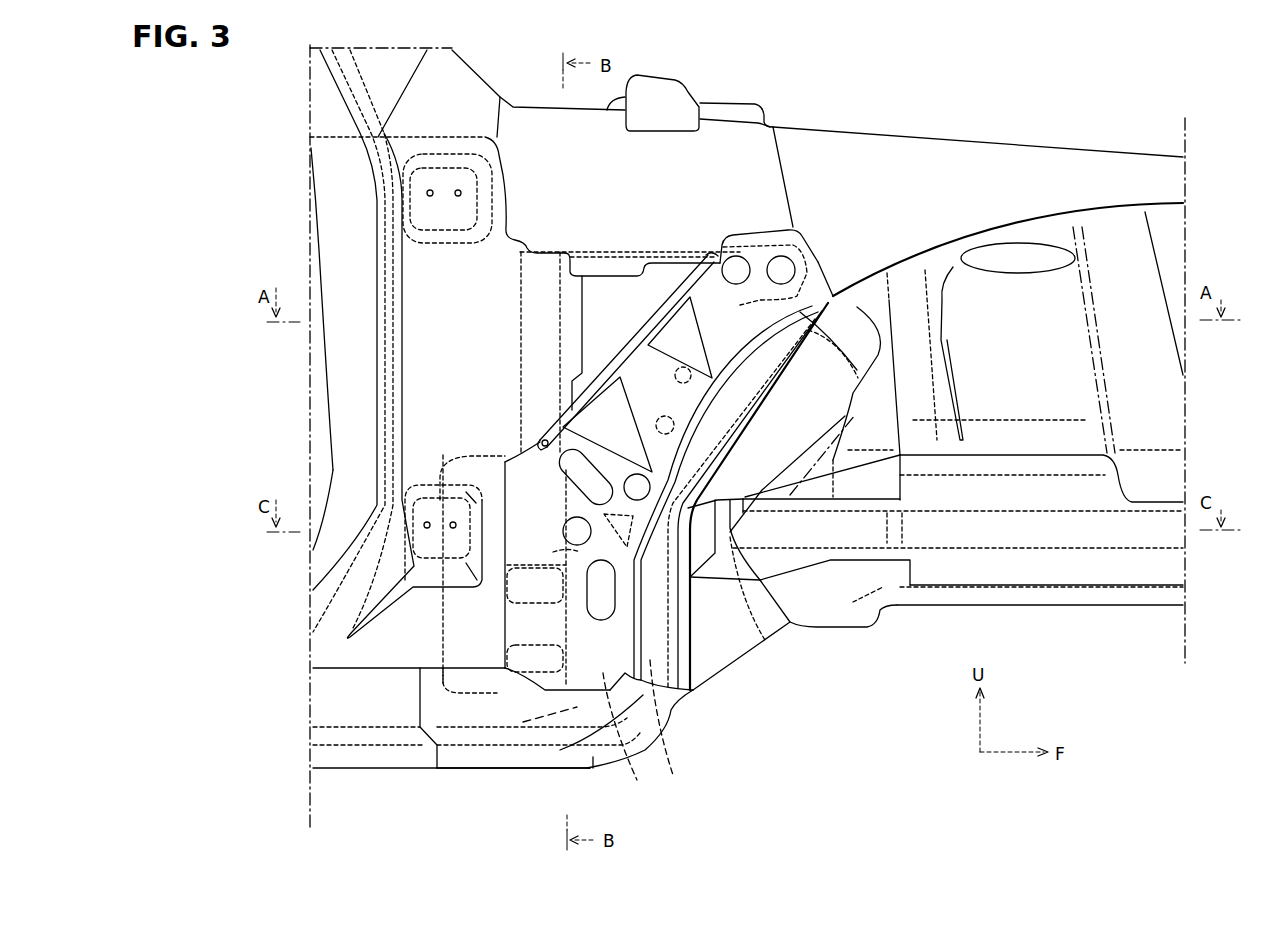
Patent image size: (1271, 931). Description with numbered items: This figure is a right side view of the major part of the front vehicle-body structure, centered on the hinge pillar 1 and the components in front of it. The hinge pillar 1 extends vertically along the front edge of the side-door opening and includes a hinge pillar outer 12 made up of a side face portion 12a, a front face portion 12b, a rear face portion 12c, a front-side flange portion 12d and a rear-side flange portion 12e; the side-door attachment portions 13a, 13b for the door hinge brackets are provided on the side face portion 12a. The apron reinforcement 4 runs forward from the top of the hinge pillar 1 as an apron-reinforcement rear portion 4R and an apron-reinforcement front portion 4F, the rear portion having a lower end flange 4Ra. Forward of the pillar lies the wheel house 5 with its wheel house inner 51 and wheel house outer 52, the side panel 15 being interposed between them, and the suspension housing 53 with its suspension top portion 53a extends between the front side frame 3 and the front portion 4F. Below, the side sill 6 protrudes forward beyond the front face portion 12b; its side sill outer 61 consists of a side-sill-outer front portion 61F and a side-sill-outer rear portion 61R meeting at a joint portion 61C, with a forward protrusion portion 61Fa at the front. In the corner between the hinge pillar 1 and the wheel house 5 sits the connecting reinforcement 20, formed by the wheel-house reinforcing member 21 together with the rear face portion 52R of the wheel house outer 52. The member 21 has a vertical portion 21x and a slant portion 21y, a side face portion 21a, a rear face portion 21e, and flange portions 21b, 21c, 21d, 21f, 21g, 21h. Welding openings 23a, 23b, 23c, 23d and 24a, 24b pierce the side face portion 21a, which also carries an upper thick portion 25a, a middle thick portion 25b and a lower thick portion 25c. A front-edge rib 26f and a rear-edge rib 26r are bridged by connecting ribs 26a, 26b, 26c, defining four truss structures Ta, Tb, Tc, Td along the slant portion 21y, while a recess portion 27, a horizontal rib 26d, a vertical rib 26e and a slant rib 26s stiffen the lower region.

The hinge pillar 1 is at (305, 250).
The front side frame 3 is at (1030, 612).
The apron reinforcement 4 is at (780, 40).
The apron-reinforcement rear portion 4R is at (754, 97).
The apron-reinforcement front portion 4F is at (822, 120).
The lower end flange 4Ra is at (583, 293).
The wheel house 5 is at (790, 668).
The side sill 6 is at (345, 780).
The hinge pillar outer 12 is at (322, 337).
The side face portion 12a is at (410, 375).
The front face portion 12b is at (536, 262).
The rear face portion 12c is at (390, 345).
The front-side flange portion 12d is at (560, 262).
The rear-side flange portion 12e is at (330, 457).
The side-door attachment portion 13a is at (410, 195).
The side-door attachment portion 13b is at (413, 528).
The side panel 15 is at (622, 283).
The connecting reinforcement 20 is at (697, 693).
The wheel-house reinforcing member 21 is at (823, 233).
The side face portion 21a is at (631, 736).
The side-face front-edge flange portion 21b is at (673, 721).
The side-face upper-front-edge flange portion 21c is at (790, 226).
The side-face rear-edge flange portion 21d is at (505, 635).
The rear face portion 21e is at (598, 385).
The rear-face upper-edge flange portion 21f is at (712, 255).
The rear-face inward-edge flange portion 21g is at (660, 257).
The rear-face lower-edge flange portion 21h is at (538, 445).
The vertical portion 21x is at (443, 600).
The slant portion 21y is at (843, 405).
The upper-front side opening portion 23a is at (626, 474).
The upper-rear side opening portion 23b is at (560, 428).
The lower-front side opening portion 23c is at (612, 595).
The lower-rear side opening portion 23d is at (565, 537).
The lower-side opening portion 24a is at (781, 256).
The upper-rear side opening portion 24b is at (736, 256).
The upper thick portion 25a is at (815, 262).
The middle thick portion 25b is at (530, 483).
The lower thick portion 25c is at (518, 648).
The upper connecting rib 26a is at (703, 300).
The middle connecting rib 26b is at (660, 327).
The lower connecting rib 26c is at (640, 405).
The horizontal rib 26d is at (507, 590).
The vertical rib 26e is at (570, 675).
The front-edge rib 26f is at (660, 363).
The rear-edge rib 26r is at (632, 340).
The slant rib 26s is at (547, 550).
The recess portion 27 is at (625, 525).
The wheel house inner 51 is at (763, 637).
The wheel house outer 52 is at (693, 627).
The rear face portion 52R is at (693, 665).
The suspension housing 53 is at (1168, 246).
The suspension top portion 53a is at (1043, 270).
The side sill outer 61 is at (476, 739).
The side-sill-outer rear portion 61R is at (403, 772).
The side-sill-outer front portion 61F is at (507, 770).
The joint portion 61C is at (443, 780).
The forward protrusion portion 61Fa is at (597, 768).
The truss structure Ta is at (704, 264).
The truss structure Tb is at (645, 321).
The truss structure Tc is at (615, 358).
The truss structure Td is at (581, 398).